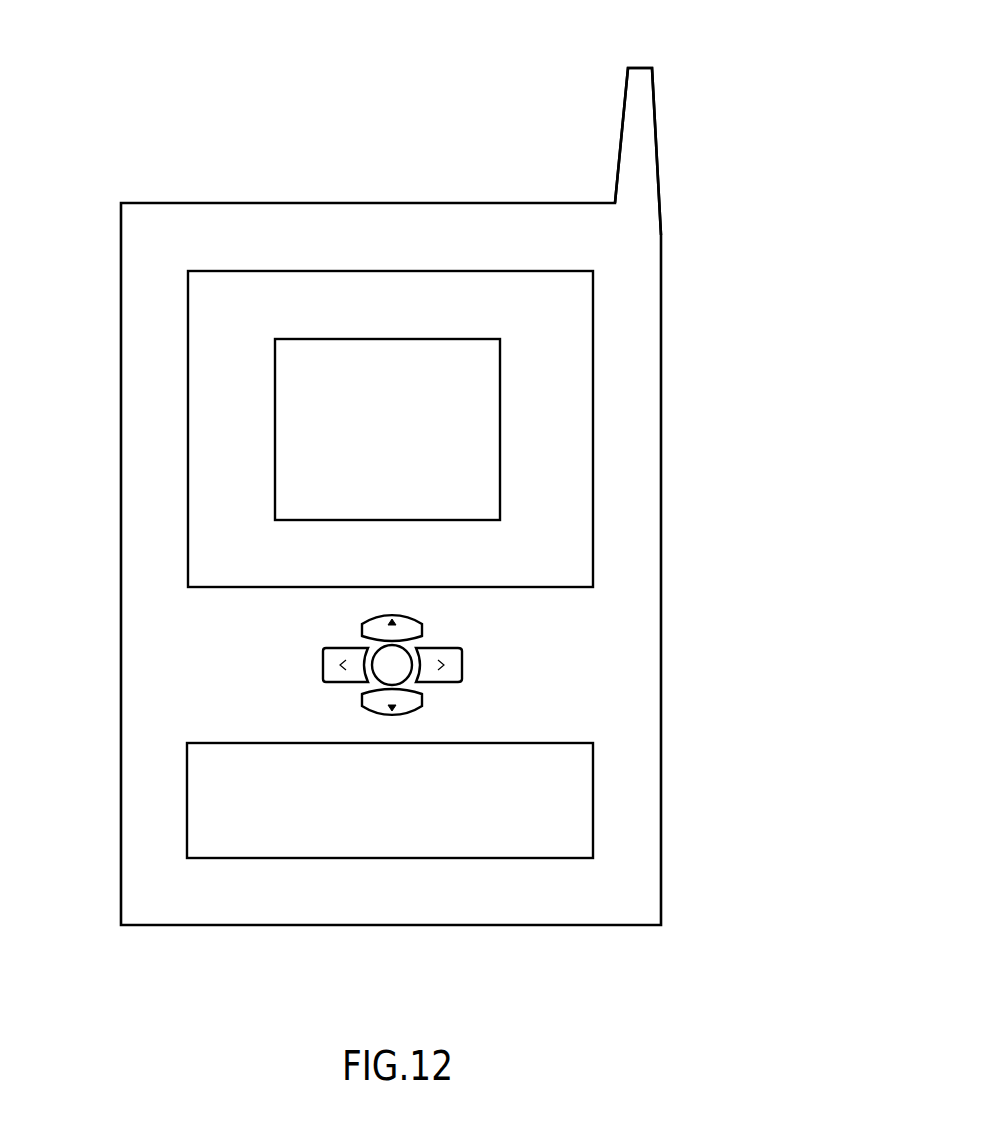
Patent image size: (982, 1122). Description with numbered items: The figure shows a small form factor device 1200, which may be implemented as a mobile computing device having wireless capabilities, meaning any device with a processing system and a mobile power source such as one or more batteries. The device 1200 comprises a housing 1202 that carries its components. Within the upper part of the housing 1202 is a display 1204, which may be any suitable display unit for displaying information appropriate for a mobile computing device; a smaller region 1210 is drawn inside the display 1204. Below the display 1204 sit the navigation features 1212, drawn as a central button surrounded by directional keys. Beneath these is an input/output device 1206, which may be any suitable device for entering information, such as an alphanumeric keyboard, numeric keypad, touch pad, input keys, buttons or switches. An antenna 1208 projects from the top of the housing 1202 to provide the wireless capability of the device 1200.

The small form factor device 1200 is at (143, 90).
The housing 1202 is at (661, 563).
The display 1204 is at (593, 292).
The input/output (I/O) device 1206 is at (593, 790).
The antenna 1208 is at (620, 127).
The display window 1210 is at (500, 452).
The navigation features 1212 is at (473, 655).